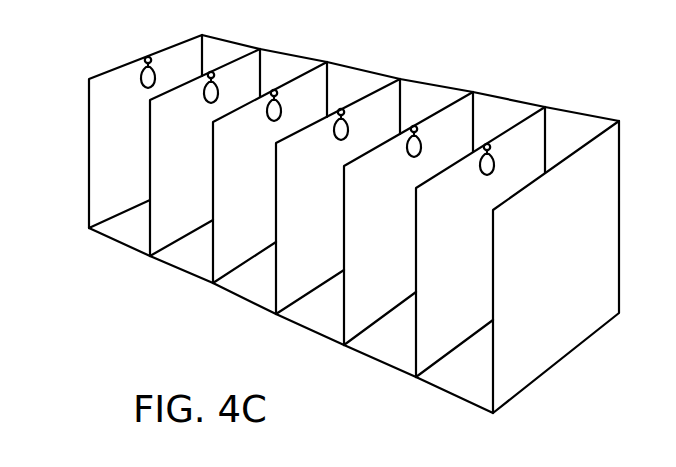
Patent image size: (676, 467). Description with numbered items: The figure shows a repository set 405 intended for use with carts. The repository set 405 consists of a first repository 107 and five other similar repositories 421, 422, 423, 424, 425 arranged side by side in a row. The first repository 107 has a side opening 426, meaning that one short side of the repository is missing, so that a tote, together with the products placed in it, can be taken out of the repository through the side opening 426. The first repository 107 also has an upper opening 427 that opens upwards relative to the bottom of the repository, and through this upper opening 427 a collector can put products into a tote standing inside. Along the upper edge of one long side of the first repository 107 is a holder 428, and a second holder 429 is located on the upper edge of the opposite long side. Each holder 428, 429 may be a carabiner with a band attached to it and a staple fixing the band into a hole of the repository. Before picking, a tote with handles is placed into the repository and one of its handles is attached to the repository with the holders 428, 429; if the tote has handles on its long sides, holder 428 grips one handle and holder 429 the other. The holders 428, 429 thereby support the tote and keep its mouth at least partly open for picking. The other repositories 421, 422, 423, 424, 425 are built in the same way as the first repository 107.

The repository set 405 is at (593, 113).
The first repository 107 is at (118, 235).
The repository 421 is at (188, 262).
The repository 422 is at (255, 290).
The repository 423 is at (323, 320).
The repository 424 is at (393, 352).
The repository 425 is at (467, 382).
The side opening 426 is at (128, 150).
The upper opening 427 is at (222, 54).
The holder 428 is at (140, 55).
The holder 429 is at (193, 90).